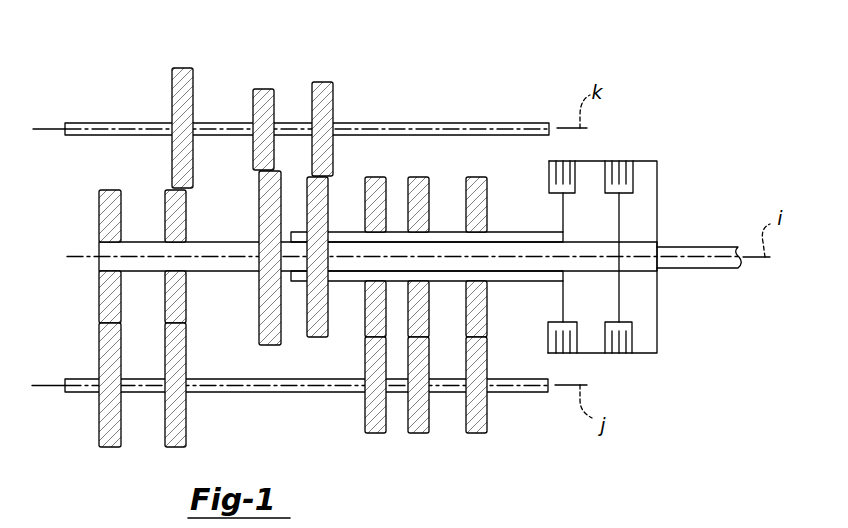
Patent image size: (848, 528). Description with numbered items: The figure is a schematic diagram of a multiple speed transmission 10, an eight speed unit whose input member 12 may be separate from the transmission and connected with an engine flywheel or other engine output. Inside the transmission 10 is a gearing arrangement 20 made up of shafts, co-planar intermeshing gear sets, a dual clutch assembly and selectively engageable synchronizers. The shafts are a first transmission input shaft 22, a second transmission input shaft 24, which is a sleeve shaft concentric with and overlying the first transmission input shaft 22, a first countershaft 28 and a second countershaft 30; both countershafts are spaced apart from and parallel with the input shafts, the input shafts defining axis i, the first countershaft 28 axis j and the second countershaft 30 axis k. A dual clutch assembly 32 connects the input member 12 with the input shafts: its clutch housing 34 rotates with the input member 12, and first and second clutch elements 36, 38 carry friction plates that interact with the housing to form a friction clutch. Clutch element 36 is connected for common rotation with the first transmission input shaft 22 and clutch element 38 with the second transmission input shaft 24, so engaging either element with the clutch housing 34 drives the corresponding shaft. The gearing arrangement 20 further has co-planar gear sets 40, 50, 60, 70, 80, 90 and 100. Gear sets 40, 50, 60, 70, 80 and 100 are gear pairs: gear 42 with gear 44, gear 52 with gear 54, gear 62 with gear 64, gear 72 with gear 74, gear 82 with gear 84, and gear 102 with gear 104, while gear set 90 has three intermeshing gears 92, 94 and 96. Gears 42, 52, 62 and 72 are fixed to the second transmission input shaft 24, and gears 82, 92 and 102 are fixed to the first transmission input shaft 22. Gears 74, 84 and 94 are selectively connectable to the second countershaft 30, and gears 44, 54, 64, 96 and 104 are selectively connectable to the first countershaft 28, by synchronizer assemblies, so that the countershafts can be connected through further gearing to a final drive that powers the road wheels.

The multiple speed transmission 10 is at (558, 85).
The input member 12 is at (718, 270).
The gearing arrangement 20 is at (86, 85).
The first transmission input shaft 22 is at (586, 272).
The second transmission input shaft 24 is at (515, 231).
The first countershaft 28 is at (527, 393).
The second countershaft 30 is at (440, 123).
The dual clutch assembly 32 is at (630, 232).
The clutch housing 34 is at (658, 175).
The first clutch element 36 is at (619, 208).
The second clutch element 38 is at (563, 208).
The co-planar gear set 40 is at (499, 325).
The gear 42 is at (487, 194).
The gear 44 is at (487, 355).
The co-planar gear set 50 is at (420, 328).
The gear 52 is at (429, 198).
The gear 54 is at (429, 412).
The co-planar gear set 60 is at (342, 342).
The gear 62 is at (365, 212).
The gear 64 is at (365, 412).
The co-planar gear set 70 is at (328, 199).
The gear 72 is at (307, 332).
The gear 74 is at (333, 100).
The co-planar gear set 80 is at (243, 190).
The gear 82 is at (259, 310).
The gear 84 is at (253, 98).
The co-planar gear set 90 is at (176, 230).
The gear 92 is at (165, 213).
The gear 94 is at (172, 88).
The gear 96 is at (186, 425).
The co-planar gear set 100 is at (76, 356).
The gear 102 is at (98, 220).
The gear 104 is at (99, 430).